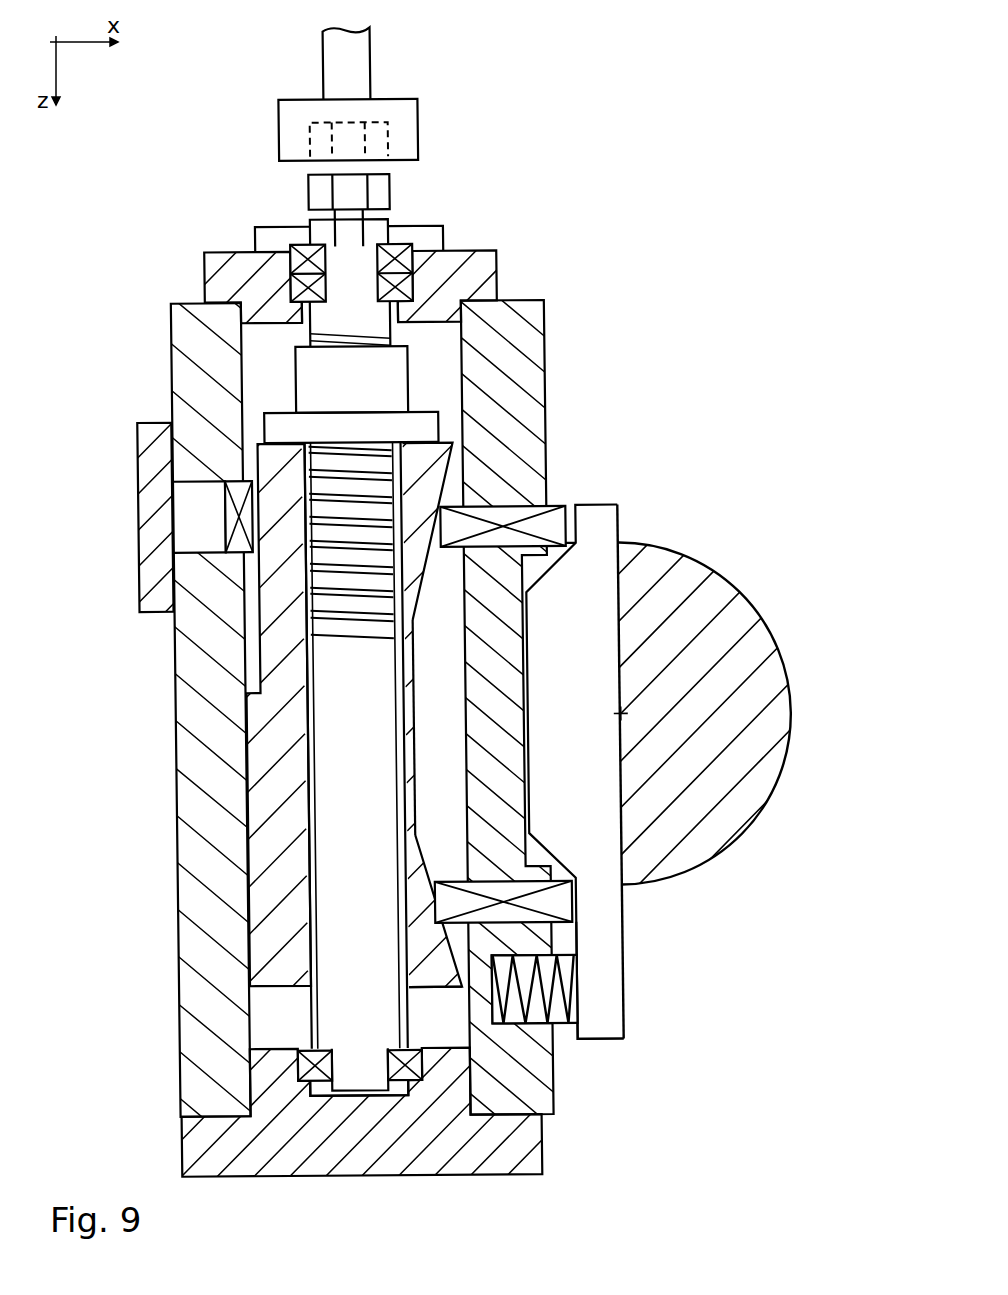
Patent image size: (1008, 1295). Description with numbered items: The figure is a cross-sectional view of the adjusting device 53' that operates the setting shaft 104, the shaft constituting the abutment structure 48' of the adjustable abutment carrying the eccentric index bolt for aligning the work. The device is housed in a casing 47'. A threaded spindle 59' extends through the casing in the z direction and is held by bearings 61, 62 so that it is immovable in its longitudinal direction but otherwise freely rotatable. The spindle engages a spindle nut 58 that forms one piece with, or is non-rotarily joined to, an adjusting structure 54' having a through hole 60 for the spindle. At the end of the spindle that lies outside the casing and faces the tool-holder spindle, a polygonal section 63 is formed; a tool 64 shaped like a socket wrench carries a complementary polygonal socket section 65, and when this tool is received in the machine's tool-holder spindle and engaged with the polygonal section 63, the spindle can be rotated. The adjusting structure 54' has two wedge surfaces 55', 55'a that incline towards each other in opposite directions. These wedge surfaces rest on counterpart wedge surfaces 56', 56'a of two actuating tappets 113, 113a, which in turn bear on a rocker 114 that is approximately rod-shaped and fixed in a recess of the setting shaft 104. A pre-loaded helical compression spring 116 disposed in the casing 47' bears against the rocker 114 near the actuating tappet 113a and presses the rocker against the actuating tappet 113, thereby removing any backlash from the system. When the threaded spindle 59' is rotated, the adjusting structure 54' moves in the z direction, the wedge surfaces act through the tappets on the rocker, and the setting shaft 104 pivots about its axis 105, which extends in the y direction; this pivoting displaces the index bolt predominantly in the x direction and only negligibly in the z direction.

The casing 47' is at (302, 647).
The abutment structure 48' is at (742, 712).
The adjusting device 53' is at (147, 537).
The adjusting structure 54' is at (640, 727).
The wedge surface 55' is at (450, 689).
The wedge surface 55'a is at (581, 911).
The counterpart wedge surface 56' is at (549, 496).
The counterpart wedge surface 56'a is at (595, 909).
The spindle nut 58 is at (337, 388).
The threaded spindle 59' is at (225, 769).
The through hole 60 is at (310, 808).
The bearing 61 is at (303, 1067).
The bearing 62 is at (297, 290).
The polygonal section 63 is at (315, 192).
The tool 64 is at (268, 125).
The polygonal socket section 65 is at (310, 133).
The setting shaft 104 is at (763, 792).
The axis 105 is at (626, 714).
The actuating tappet 113 is at (562, 532).
The actuating tappet 113a is at (623, 885).
The rocker 114 is at (613, 993).
The helical compression spring 116 is at (572, 1000).